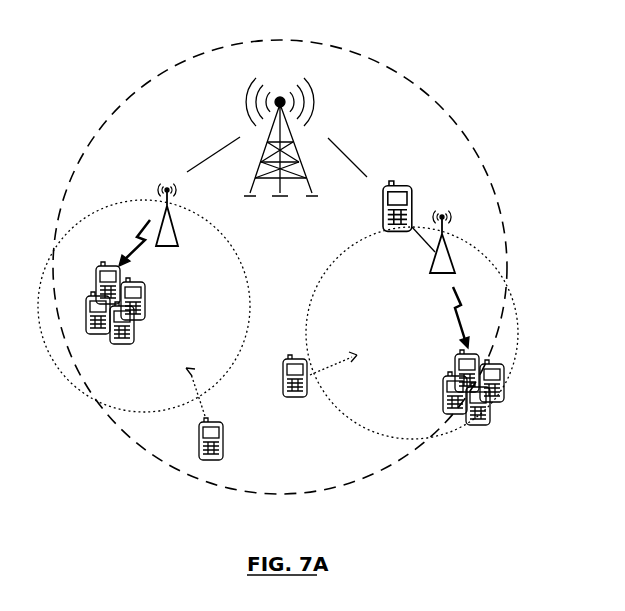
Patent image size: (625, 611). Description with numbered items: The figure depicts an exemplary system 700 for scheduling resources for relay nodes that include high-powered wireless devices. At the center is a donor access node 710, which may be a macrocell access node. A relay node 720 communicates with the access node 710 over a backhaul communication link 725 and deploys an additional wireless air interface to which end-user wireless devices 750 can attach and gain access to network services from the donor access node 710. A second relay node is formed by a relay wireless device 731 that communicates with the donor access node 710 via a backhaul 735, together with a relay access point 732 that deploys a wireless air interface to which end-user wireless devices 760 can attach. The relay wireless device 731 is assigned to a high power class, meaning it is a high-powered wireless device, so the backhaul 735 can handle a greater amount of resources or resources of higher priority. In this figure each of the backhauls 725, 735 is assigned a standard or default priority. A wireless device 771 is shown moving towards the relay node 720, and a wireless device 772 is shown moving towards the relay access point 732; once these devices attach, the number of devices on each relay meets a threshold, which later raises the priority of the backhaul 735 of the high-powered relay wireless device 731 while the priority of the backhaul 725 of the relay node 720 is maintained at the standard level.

The system 700 is at (479, 57).
The access node 710 is at (280, 100).
The relay node 720 is at (180, 246).
The backhaul communication link 725 is at (215, 151).
The relay wireless device 731 is at (383, 226).
The relay access point 732 is at (455, 273).
The backhaul 735 is at (351, 158).
The end-user wireless devices 750 is at (114, 352).
The end-user wireless devices 760 is at (433, 416).
The wireless device 771 is at (222, 455).
The wireless device 772 is at (290, 394).